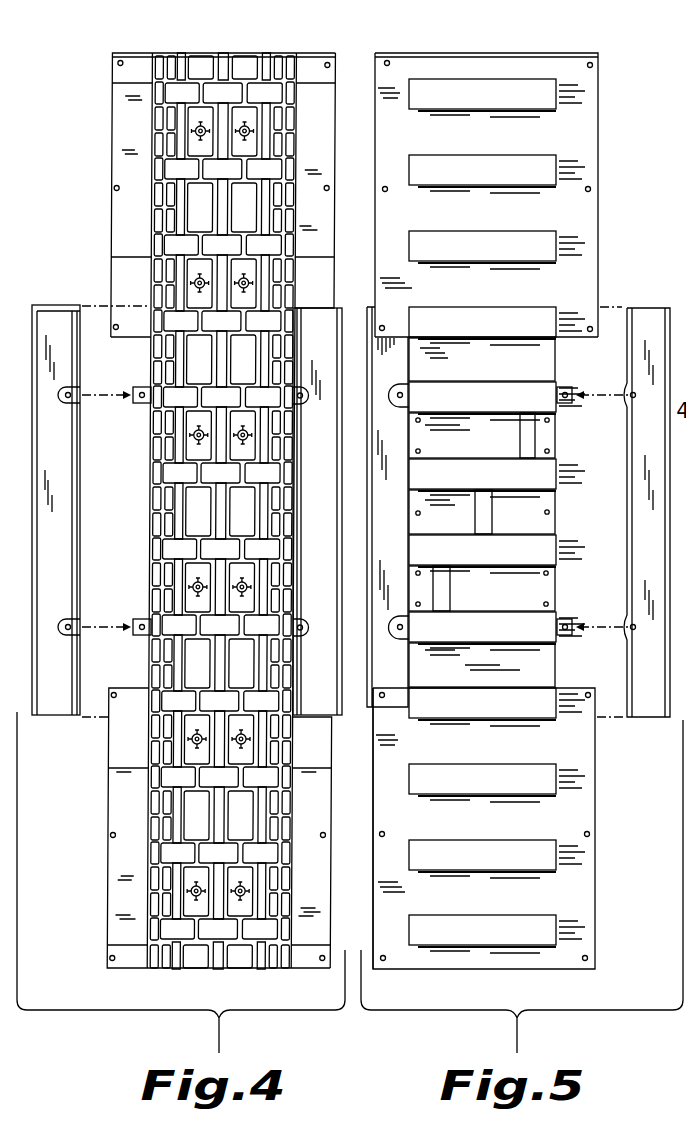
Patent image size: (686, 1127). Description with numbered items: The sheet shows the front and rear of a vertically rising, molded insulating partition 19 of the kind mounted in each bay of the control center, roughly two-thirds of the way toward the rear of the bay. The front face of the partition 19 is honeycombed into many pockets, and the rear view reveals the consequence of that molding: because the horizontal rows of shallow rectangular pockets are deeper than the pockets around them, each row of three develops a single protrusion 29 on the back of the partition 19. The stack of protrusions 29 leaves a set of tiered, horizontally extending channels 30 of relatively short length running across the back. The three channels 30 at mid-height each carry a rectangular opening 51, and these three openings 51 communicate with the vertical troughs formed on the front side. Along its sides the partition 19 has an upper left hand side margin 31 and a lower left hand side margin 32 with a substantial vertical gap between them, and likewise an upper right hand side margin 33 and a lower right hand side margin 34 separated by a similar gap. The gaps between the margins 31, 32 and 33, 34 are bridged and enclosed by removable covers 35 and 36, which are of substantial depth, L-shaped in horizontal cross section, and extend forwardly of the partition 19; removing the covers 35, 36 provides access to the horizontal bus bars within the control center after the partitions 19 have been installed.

In FIG. 4, the insulating partition 19 is at (232, 490).
In FIG. 5, the insulating partition 19 is at (471, 486).
In FIG. 5, the protrusion 29 is at (492, 941).
In FIG. 5, the channel 30 is at (471, 511).
In FIG. 4, the upper left hand side margin 31 is at (131, 154).
In FIG. 5, the upper left hand side margin 31 is at (592, 148).
In FIG. 4, the lower left hand side margin 32 is at (120, 856).
In FIG. 5, the lower left hand side margin 32 is at (592, 782).
In FIG. 4, the upper right hand side margin 33 is at (322, 141).
In FIG. 5, the upper right hand side margin 33 is at (392, 155).
In FIG. 4, the lower right hand side margin 34 is at (324, 876).
In FIG. 5, the lower right hand side margin 34 is at (380, 793).
In FIG. 4, the removable cover 35 is at (44, 438).
In FIG. 5, the removable cover 35 is at (637, 490).
In FIG. 4, the removable cover 36 is at (308, 429).
In FIG. 5, the removable cover 36 is at (376, 516).
In FIG. 4, the rectangular opening 51 is at (184, 436).
In FIG. 5, the rectangular opening 51 is at (528, 438).